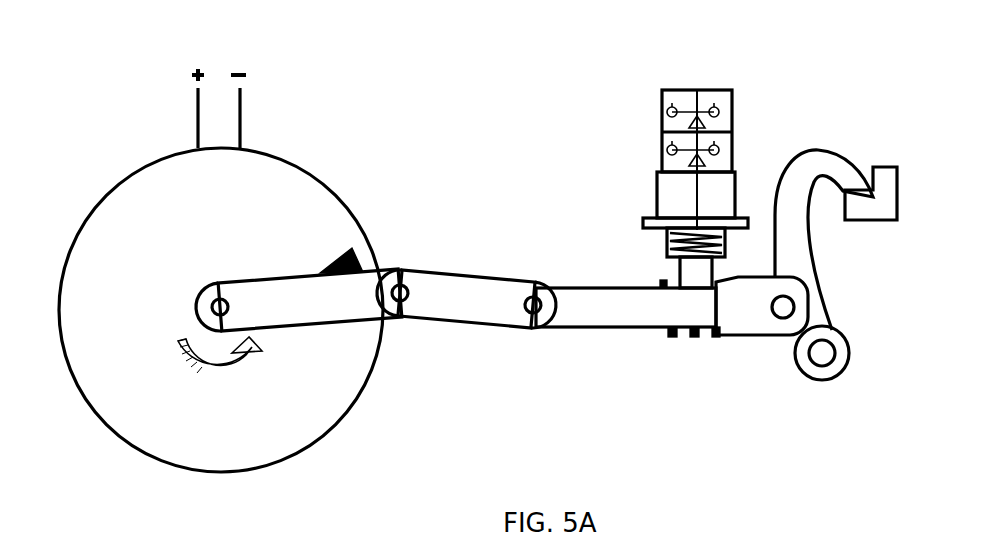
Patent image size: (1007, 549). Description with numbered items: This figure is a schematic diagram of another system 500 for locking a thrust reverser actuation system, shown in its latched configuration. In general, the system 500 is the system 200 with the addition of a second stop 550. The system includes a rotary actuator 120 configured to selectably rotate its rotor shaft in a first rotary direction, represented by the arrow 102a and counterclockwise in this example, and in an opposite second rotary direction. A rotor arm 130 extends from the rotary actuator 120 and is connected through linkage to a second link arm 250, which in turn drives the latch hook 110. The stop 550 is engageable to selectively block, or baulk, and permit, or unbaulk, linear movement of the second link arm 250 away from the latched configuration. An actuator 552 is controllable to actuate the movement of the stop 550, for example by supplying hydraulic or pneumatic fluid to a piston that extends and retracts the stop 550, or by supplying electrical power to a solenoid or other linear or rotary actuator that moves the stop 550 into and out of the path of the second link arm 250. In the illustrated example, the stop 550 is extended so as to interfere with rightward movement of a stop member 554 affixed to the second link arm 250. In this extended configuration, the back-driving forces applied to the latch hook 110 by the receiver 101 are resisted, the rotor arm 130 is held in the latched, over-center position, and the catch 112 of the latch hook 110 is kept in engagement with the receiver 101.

The system 500 is at (80, 36).
The system 200 is at (82, 91).
The rotary actuator 120 is at (96, 204).
The first rotary direction 102a is at (188, 373).
The rotor arm 130 is at (296, 333).
The second link arm 250 is at (637, 325).
The stop member 554 is at (735, 337).
The stop 550 is at (676, 276).
The actuator 552 is at (662, 99).
The latch hook 110 is at (826, 290).
The catch 112 is at (812, 151).
The receiver 101 is at (893, 167).